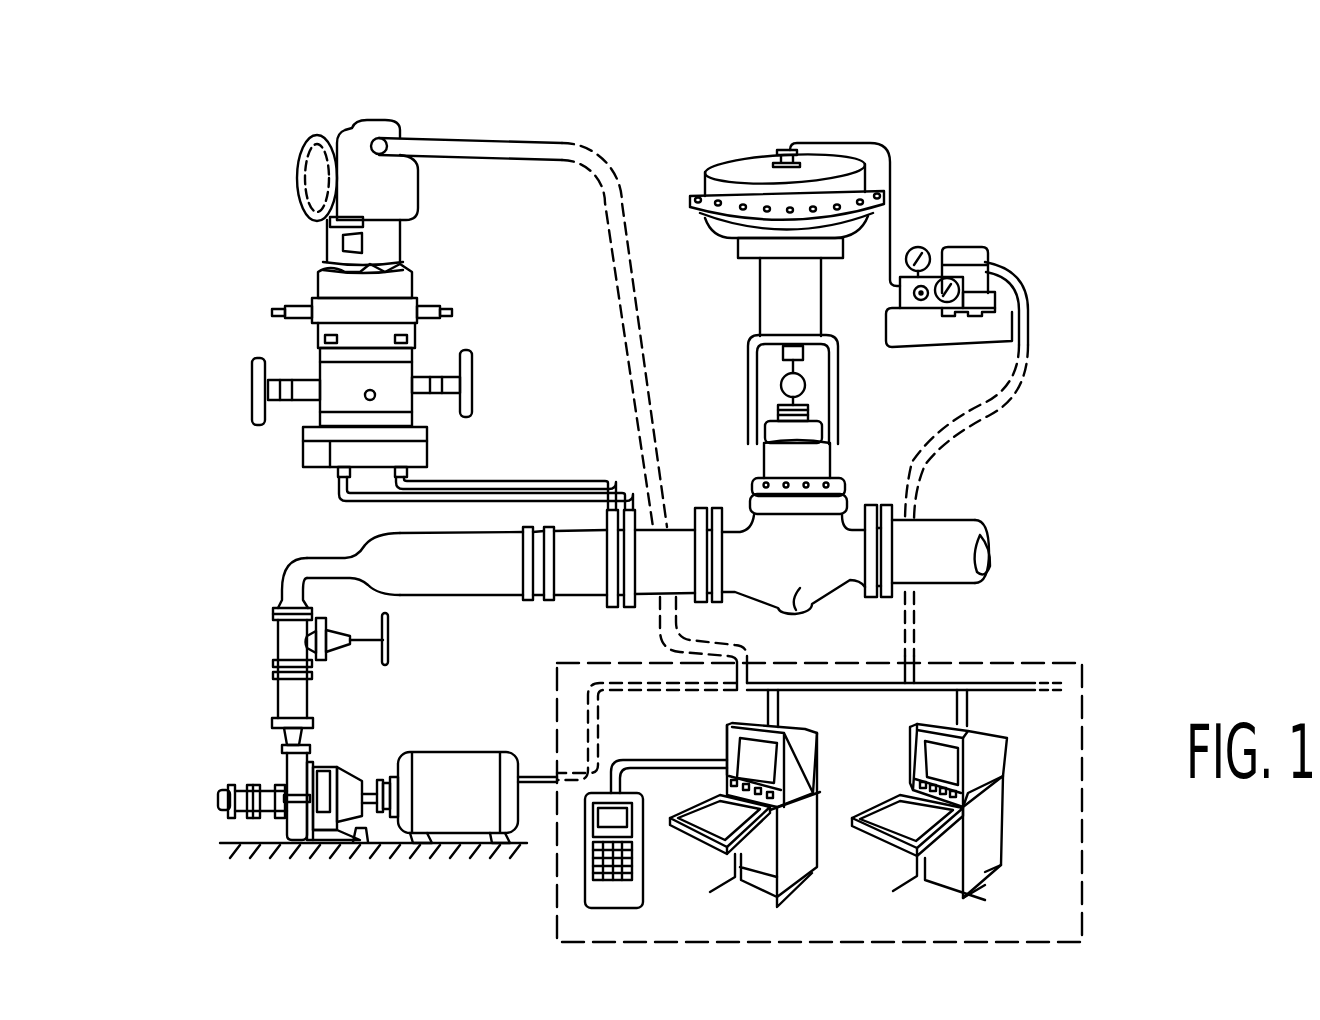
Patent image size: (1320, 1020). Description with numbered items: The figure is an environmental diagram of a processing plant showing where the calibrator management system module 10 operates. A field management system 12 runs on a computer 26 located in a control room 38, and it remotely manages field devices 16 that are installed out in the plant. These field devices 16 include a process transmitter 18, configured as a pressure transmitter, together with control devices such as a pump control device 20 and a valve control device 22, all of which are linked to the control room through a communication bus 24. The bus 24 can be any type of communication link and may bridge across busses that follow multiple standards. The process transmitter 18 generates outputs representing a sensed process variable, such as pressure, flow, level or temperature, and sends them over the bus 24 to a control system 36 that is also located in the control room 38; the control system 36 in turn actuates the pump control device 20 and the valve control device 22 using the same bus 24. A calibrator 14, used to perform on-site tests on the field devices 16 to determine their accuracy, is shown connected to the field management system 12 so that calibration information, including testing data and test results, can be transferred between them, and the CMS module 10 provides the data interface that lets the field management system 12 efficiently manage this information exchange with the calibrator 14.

The calibrator management system module 10 is at (762, 830).
The field management system 12 is at (762, 830).
The calibrator 14 is at (584, 862).
The field device 16 is at (599, 489).
The process transmitter 18 is at (303, 172).
The pump control device 20 is at (225, 760).
The valve control device 22 is at (946, 205).
The communication bus 24 is at (622, 328).
The computer 26 is at (698, 852).
The control system 36 is at (1005, 742).
The control room 38 is at (1083, 857).